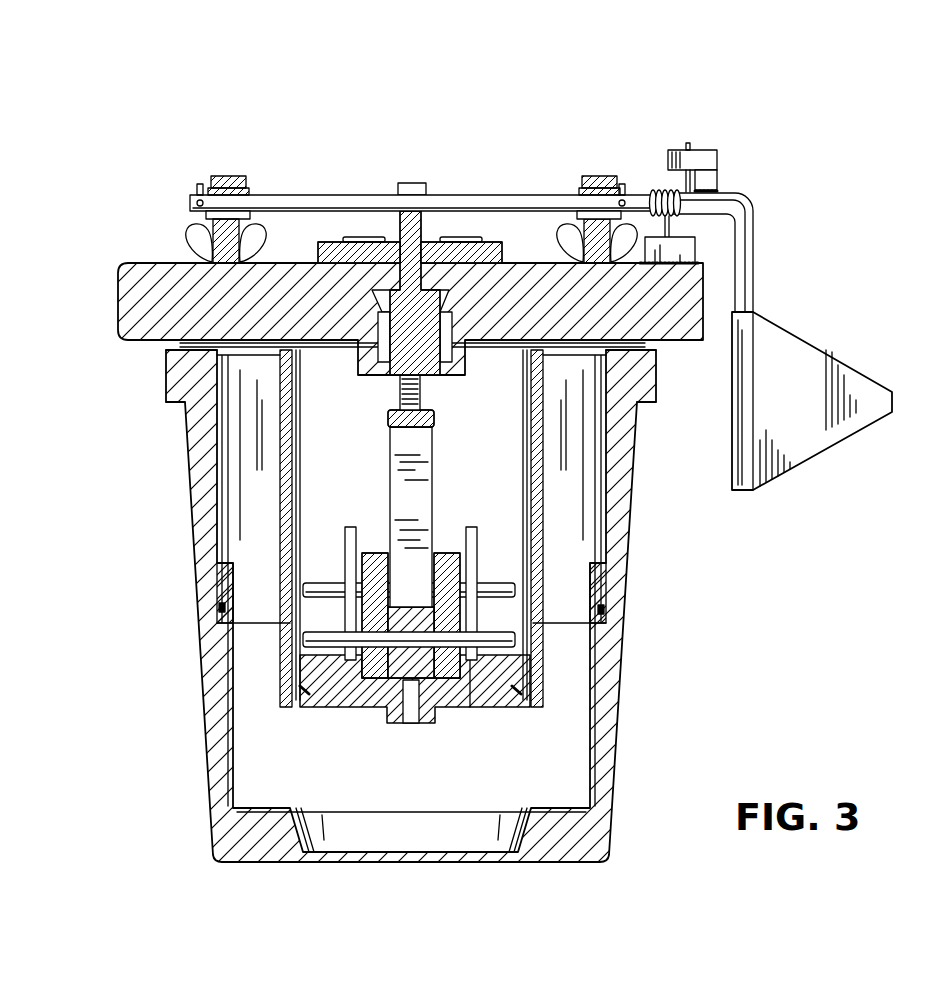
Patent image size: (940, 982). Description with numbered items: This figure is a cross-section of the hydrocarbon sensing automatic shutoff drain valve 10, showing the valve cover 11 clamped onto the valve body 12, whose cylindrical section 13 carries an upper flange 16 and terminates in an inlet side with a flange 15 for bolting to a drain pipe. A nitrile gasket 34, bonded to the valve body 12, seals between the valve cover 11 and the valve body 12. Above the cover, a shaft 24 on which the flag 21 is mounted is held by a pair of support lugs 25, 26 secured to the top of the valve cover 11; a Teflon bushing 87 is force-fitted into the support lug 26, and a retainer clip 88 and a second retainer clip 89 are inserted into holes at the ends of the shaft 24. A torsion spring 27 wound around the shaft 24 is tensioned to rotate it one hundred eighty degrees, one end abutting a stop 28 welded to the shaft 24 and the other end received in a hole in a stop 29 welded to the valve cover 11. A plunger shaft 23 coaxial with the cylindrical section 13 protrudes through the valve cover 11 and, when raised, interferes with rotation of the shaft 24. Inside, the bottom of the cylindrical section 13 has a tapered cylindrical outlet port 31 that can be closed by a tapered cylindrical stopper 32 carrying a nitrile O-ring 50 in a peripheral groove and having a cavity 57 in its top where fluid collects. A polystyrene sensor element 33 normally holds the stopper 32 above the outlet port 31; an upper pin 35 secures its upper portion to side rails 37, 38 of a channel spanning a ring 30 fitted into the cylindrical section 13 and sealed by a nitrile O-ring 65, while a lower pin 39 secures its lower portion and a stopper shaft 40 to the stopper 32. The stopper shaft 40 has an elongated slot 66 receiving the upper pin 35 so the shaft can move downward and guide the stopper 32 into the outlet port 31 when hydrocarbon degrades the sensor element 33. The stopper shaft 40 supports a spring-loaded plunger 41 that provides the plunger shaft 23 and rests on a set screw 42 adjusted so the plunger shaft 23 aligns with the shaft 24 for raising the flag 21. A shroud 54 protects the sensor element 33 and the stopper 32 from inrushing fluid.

The hydrocarbon sensing automatic shutoff drain valve 10 is at (617, 84).
The valve cover 11 is at (140, 266).
The valve body 12 is at (178, 542).
The cylindrical section 13 is at (215, 770).
The flange 15 is at (187, 494).
The upper flange 16 is at (168, 385).
The flag 21 is at (808, 445).
The plunger shaft 23 is at (417, 184).
The shaft 24 is at (342, 197).
The support lug 25 is at (228, 178).
The support lug 26 is at (585, 178).
The torsion spring 27 is at (663, 190).
The stop 28 is at (711, 151).
The stop 29 is at (682, 245).
The ring 30 is at (226, 598).
The tapered cylindrical outlet port 31 is at (305, 832).
The tapered cylindrical stopper 32 is at (352, 687).
The polystyrene sensor element 33 is at (440, 550).
The nitrile gasket 34 is at (176, 343).
The upper pin 35 is at (590, 577).
The side rail 37 is at (350, 570).
The side rail 38 is at (477, 563).
The lower pin 39 is at (520, 640).
The stopper shaft 40 is at (433, 470).
The spring-loaded plunger 41 is at (441, 347).
The set screw 42 is at (398, 388).
The nitrile O-ring 50 is at (303, 692).
The shroud 54 is at (537, 487).
The cavity 57 is at (468, 667).
The nitrile O-ring 65 is at (221, 607).
The elongated slot 66 is at (398, 478).
The Teflon bushing 87 is at (578, 212).
The retainer clip 88 is at (622, 186).
The second retainer clip 89 is at (198, 186).